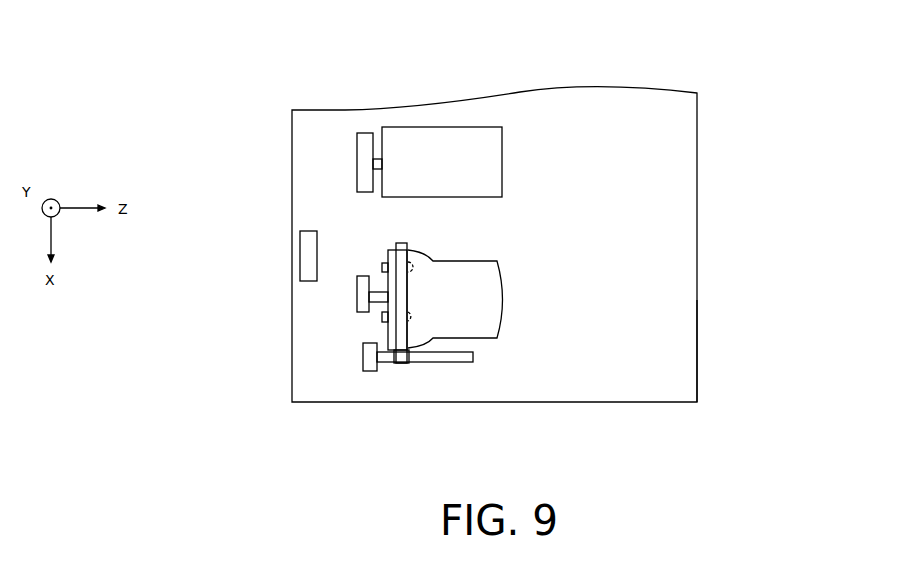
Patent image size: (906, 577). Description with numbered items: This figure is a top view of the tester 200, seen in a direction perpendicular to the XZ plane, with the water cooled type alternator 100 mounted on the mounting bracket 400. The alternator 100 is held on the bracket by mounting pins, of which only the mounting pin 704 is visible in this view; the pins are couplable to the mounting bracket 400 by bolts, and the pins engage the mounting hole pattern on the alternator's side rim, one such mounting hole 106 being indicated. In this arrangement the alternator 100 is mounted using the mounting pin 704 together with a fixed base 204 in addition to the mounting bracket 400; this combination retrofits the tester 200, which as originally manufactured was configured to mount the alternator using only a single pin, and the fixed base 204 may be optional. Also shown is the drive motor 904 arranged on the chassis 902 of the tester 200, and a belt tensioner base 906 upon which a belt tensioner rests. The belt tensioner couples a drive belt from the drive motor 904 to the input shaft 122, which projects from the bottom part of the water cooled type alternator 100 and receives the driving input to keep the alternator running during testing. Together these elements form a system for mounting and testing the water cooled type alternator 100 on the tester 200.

The tester 200 is at (310, 110).
The chassis 902 is at (663, 370).
The drive motor 904 is at (472, 170).
The belt tensioner base 906 is at (307, 247).
The input shaft 122 is at (373, 293).
The mounting bracket 400 is at (385, 325).
The water cooled type alternator 100 is at (477, 297).
The mounting pin 704 is at (442, 362).
The fixed base 204 is at (370, 360).
The mounting hole 106 is at (402, 357).